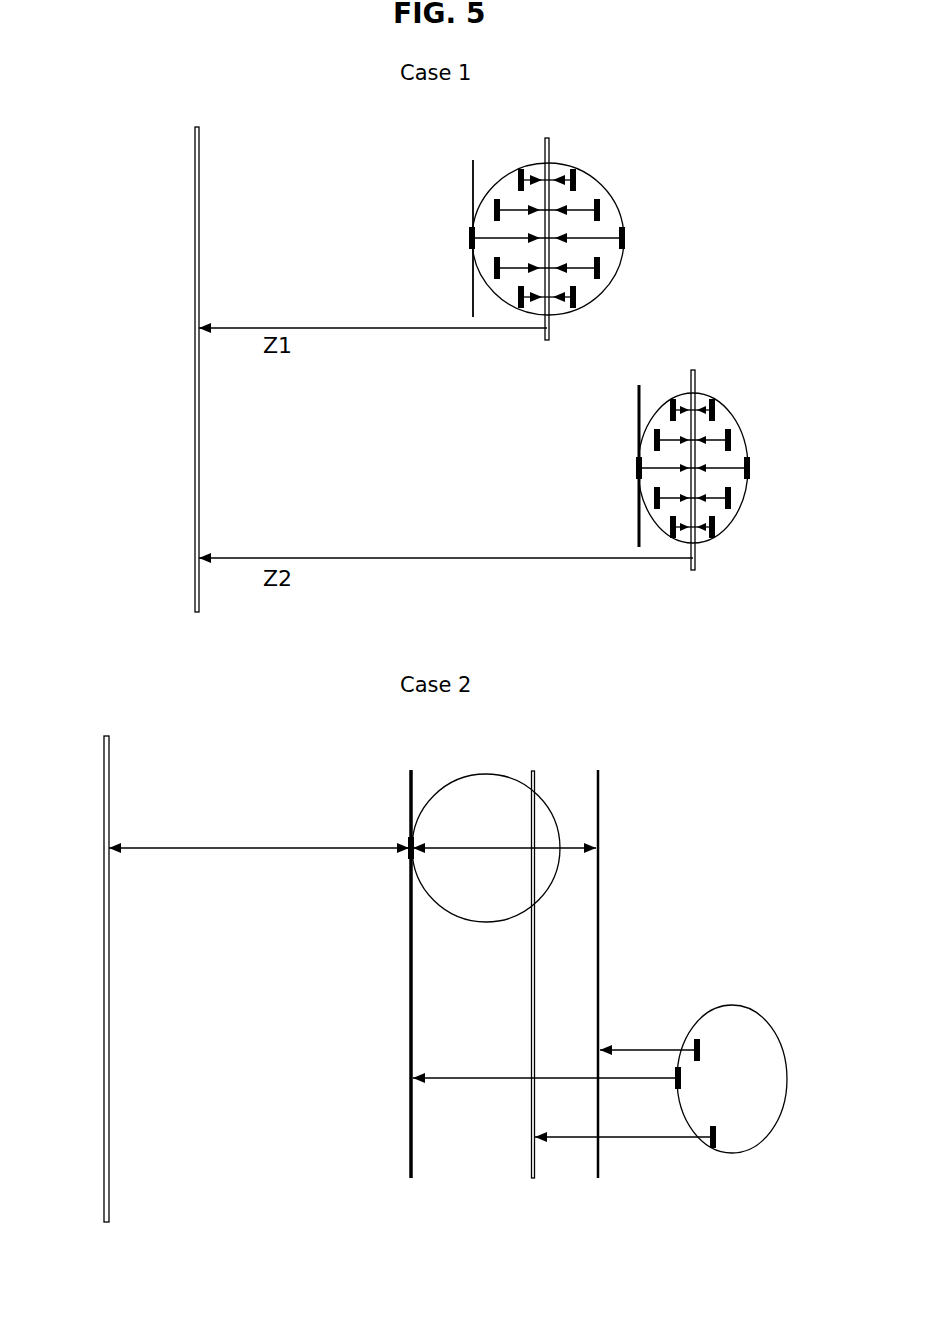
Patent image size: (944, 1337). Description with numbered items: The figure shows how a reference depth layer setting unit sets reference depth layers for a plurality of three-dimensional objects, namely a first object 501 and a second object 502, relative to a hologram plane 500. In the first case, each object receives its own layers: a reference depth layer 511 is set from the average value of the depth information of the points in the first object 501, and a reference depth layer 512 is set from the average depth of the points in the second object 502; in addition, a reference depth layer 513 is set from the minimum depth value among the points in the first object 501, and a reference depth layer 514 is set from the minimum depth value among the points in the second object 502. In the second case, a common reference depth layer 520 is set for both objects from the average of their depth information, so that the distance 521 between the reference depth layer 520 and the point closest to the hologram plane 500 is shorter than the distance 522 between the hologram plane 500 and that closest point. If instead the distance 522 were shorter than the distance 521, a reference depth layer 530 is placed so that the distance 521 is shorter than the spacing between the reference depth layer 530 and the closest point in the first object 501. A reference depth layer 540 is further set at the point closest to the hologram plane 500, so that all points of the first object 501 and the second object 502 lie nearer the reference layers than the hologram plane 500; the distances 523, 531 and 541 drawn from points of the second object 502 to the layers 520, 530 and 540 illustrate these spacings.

The hologram plane 500 is at (196, 271).
The first object 501 is at (603, 183).
The second object 502 is at (740, 425).
The reference depth layer 511 is at (549, 138).
The reference depth layer 512 is at (695, 368).
The reference depth layer 513 is at (473, 160).
The reference depth layer 514 is at (640, 386).
The common reference depth layer 520 is at (601, 790).
The distance 521 is at (488, 854).
The distance 522 is at (238, 854).
The distance of object point to rear plane 523 is at (648, 1046).
The reference depth layer 530 is at (533, 770).
The distance of object point to intermediate plane 531 is at (635, 1142).
The reference depth layer 540 is at (410, 766).
The distance of object point to front plane 541 is at (478, 1084).